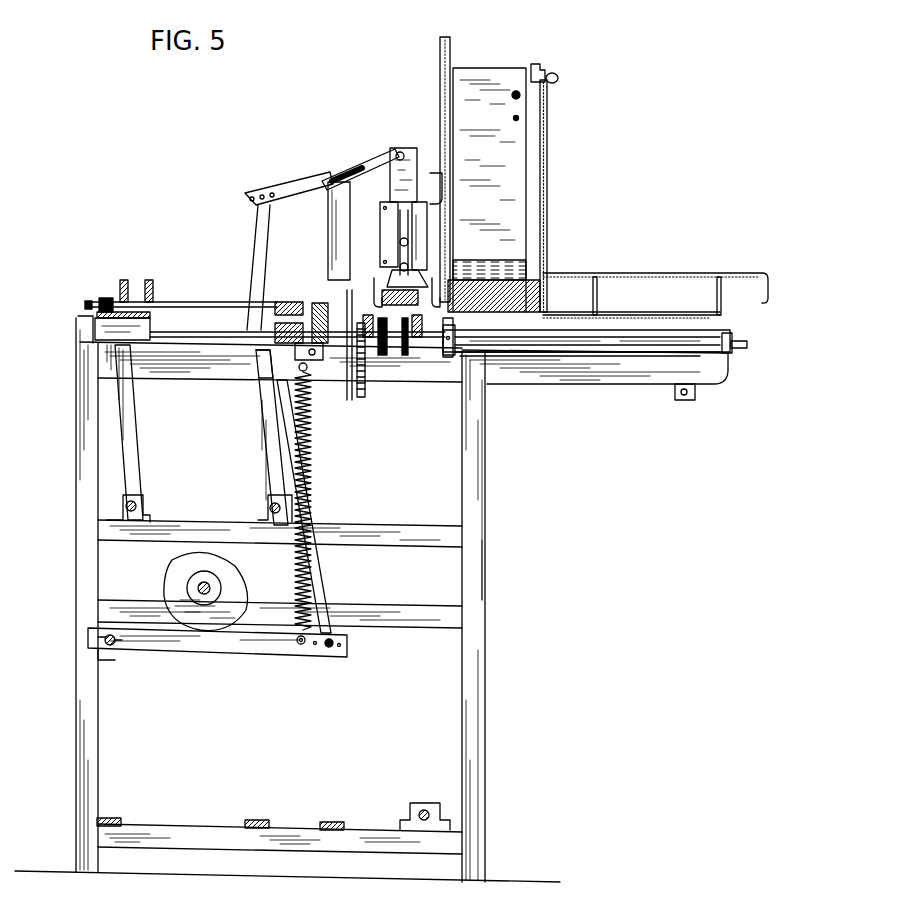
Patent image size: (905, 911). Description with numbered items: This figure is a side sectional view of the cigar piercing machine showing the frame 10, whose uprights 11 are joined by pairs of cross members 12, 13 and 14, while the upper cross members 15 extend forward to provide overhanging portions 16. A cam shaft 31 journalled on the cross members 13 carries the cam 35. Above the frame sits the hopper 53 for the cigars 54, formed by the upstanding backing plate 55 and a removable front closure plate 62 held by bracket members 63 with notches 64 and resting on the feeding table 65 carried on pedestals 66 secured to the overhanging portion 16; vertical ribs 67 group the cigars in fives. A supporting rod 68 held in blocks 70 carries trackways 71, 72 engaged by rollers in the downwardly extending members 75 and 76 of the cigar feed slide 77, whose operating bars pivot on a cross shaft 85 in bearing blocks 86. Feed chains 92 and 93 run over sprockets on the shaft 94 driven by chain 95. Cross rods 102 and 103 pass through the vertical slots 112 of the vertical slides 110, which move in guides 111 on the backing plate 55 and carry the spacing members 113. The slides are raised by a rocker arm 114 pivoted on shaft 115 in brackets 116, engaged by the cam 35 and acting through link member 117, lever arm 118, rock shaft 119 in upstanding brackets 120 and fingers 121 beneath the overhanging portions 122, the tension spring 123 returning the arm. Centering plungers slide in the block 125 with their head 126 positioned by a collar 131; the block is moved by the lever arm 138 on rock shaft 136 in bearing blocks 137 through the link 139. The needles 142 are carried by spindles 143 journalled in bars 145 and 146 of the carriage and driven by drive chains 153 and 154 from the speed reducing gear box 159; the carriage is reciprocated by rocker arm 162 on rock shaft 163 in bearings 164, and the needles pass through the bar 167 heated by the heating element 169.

The frame 10 is at (68, 409).
The uprights 11 is at (80, 731).
The cross members 12 is at (448, 843).
The cross members 13 is at (434, 626).
The cross members 14 is at (428, 540).
The upper cross members 15 is at (200, 376).
The overhanging portions 16 is at (636, 383).
The cam shaft 31 is at (212, 584).
The cam 35 is at (174, 576).
The hopper 53 is at (505, 62).
The cigars 54 is at (484, 274).
The backing plate 55 is at (455, 100).
The front closure plate 62 is at (548, 172).
The bracket members 63 is at (544, 68).
The notches 64 is at (558, 77).
The feeding table 65 is at (660, 276).
The pedestals 66 is at (598, 280).
The vertical ribs 67 is at (444, 180).
The supporting rod 68 is at (546, 348).
The blocks 70 is at (735, 354).
The trackway 71 is at (600, 354).
The trackway 72 is at (610, 330).
The downwardly extending member 75 is at (577, 320).
The downwardly extending member 76 is at (690, 392).
The cigar feed slide 77 is at (684, 307).
The cross shaft 85 is at (409, 813).
The bearing blocks 86 is at (415, 835).
The feed chain 92 is at (410, 352).
The feed chain 93 is at (382, 352).
The shaft 94 is at (440, 352).
The chain 95 is at (356, 388).
The rod 102 is at (400, 242).
The rod 103 is at (400, 266).
The vertical slides 110 is at (398, 174).
The guides 111 is at (418, 232).
The vertical slots 112 is at (392, 222).
The spacing members 113 is at (378, 270).
The rocker arm 114 is at (250, 651).
The shaft 115 is at (118, 650).
The brackets 116 is at (110, 672).
The link member 117 is at (318, 578).
The lever arm 118 is at (292, 182).
The rock shaft 119 is at (330, 176).
The upstanding brackets 120 is at (330, 240).
The fingers 121 is at (366, 164).
The overhanging portions 122 is at (396, 150).
The tension spring 123 is at (314, 461).
The block 125 is at (320, 301).
The head 126 is at (326, 344).
The collar 131 is at (300, 290).
The rock shaft 136 is at (270, 506).
The bearing blocks 137 is at (262, 518).
The lever arm 138 is at (268, 458).
The link 139 is at (268, 360).
The needles 142 is at (228, 303).
The spindles 143 is at (152, 300).
The bar 145 is at (123, 279).
The bar 146 is at (150, 279).
The drive chain 153 is at (98, 297).
The drive chain 154 is at (109, 296).
The speed reducing gear box 159 is at (88, 311).
The rocker arm 162 is at (146, 426).
The rock shaft 163 is at (138, 505).
The bearings 164 is at (151, 515).
The bar 167 is at (268, 296).
The heating element 169 is at (275, 326).